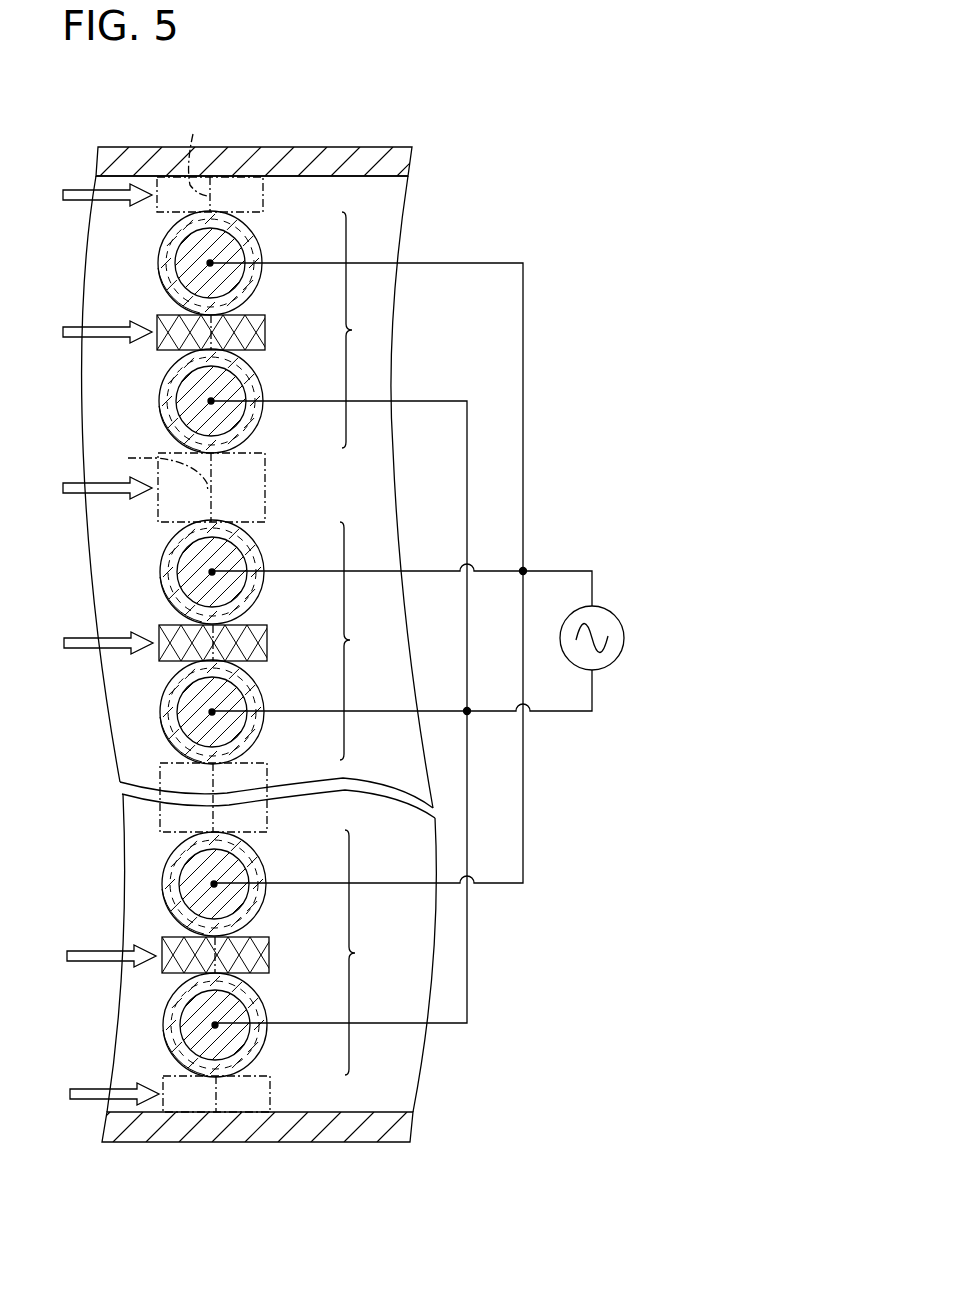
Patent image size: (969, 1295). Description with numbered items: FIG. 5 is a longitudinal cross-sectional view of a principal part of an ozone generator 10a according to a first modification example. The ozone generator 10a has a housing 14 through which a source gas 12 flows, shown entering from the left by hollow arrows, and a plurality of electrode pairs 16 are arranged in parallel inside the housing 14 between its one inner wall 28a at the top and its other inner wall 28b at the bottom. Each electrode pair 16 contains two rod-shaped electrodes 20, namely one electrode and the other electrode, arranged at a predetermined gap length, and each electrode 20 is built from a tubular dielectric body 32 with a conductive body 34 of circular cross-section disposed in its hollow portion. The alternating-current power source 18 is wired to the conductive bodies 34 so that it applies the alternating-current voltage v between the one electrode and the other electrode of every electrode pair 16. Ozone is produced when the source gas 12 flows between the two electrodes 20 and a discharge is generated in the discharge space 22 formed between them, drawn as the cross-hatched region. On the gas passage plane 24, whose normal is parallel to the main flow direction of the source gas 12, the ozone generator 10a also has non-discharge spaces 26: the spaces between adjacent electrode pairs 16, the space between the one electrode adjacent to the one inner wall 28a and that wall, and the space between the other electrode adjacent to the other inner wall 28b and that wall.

The ozone generator 10a is at (284, 96).
The source gas 12 is at (72, 184).
The housing 14 is at (348, 147).
The electrode pair 16 is at (364, 643).
The alternating-current power source 18 is at (601, 608).
The electrode 20 is at (223, 644).
The discharge space 22 is at (160, 315).
The gas passage plane 24 is at (246, 1153).
The non-discharge space 26 is at (264, 190).
The one inner wall 28a is at (383, 178).
The other inner wall 28b is at (383, 1112).
The dielectric body 32 is at (172, 246).
The conductive body 34 is at (182, 263).